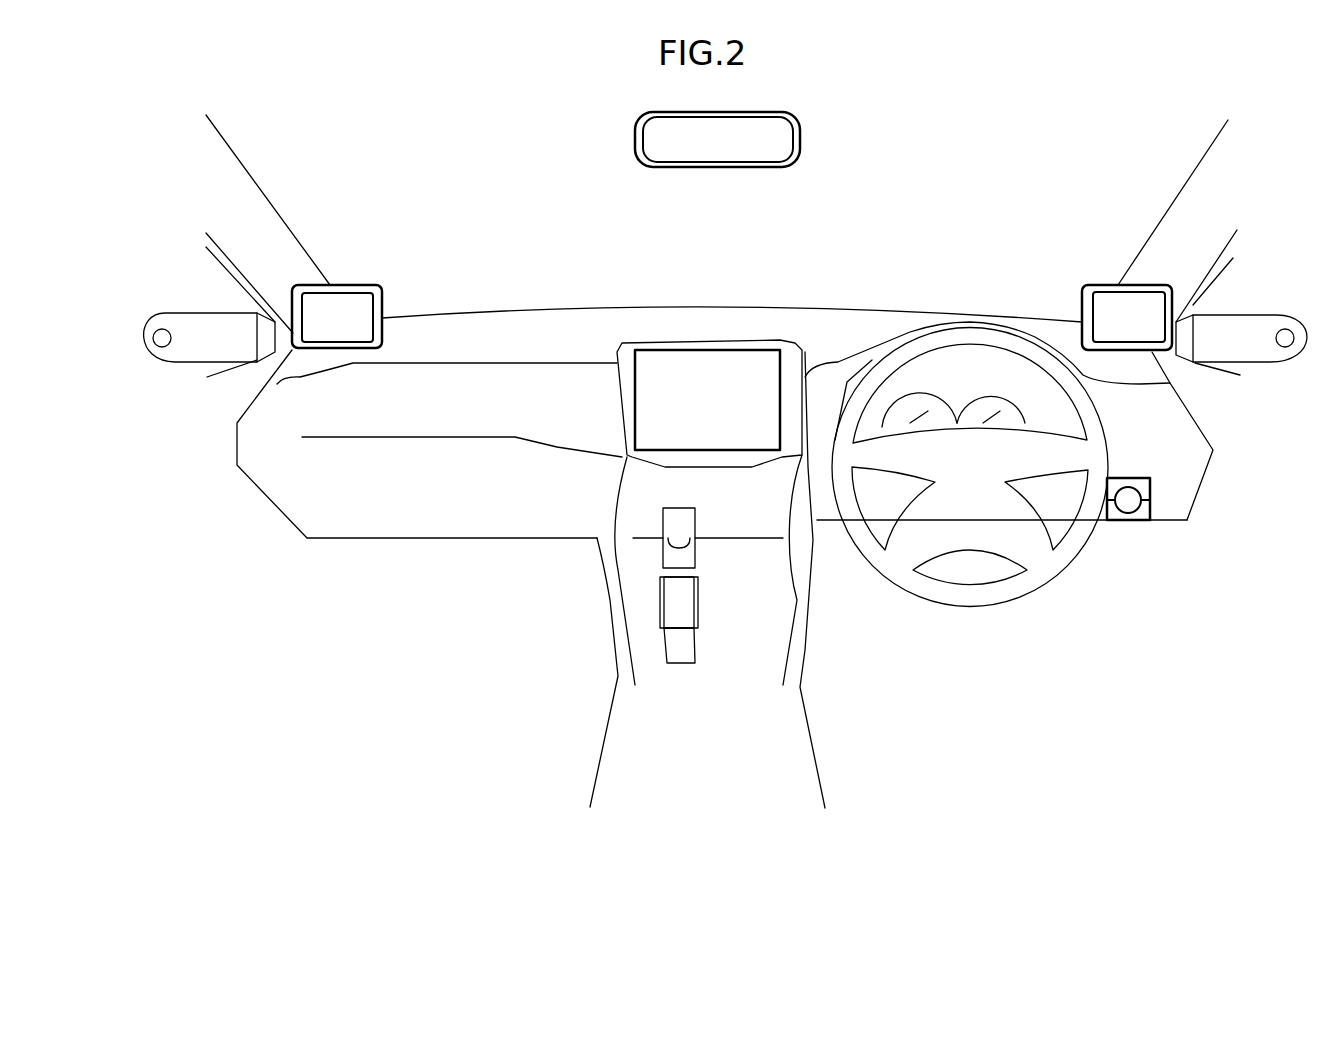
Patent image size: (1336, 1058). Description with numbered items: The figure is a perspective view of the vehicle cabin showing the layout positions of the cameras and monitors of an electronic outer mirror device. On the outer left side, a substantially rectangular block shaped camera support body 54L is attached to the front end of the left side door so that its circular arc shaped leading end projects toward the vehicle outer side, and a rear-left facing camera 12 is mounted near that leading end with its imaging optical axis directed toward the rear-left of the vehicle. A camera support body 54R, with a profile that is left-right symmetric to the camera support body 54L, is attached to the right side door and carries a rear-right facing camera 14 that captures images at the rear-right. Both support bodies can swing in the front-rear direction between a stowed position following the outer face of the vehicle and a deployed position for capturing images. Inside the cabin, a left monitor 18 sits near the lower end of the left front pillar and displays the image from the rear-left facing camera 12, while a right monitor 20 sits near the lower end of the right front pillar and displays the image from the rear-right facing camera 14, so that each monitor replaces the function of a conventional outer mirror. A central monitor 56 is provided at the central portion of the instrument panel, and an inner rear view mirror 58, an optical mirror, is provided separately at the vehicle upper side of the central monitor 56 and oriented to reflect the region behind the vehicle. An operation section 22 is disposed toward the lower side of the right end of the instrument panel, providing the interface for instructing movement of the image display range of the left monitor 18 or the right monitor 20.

The rear-left facing camera 12 is at (157, 322).
The rear-right facing camera 14 is at (1280, 323).
The left monitor 18 is at (367, 300).
The right monitor 20 is at (1102, 302).
The operation section 22 is at (1167, 511).
The camera support body 54L is at (168, 318).
The camera support body 54R is at (1268, 315).
The central monitor 56 is at (633, 427).
The inner rear view mirror 58 is at (708, 155).